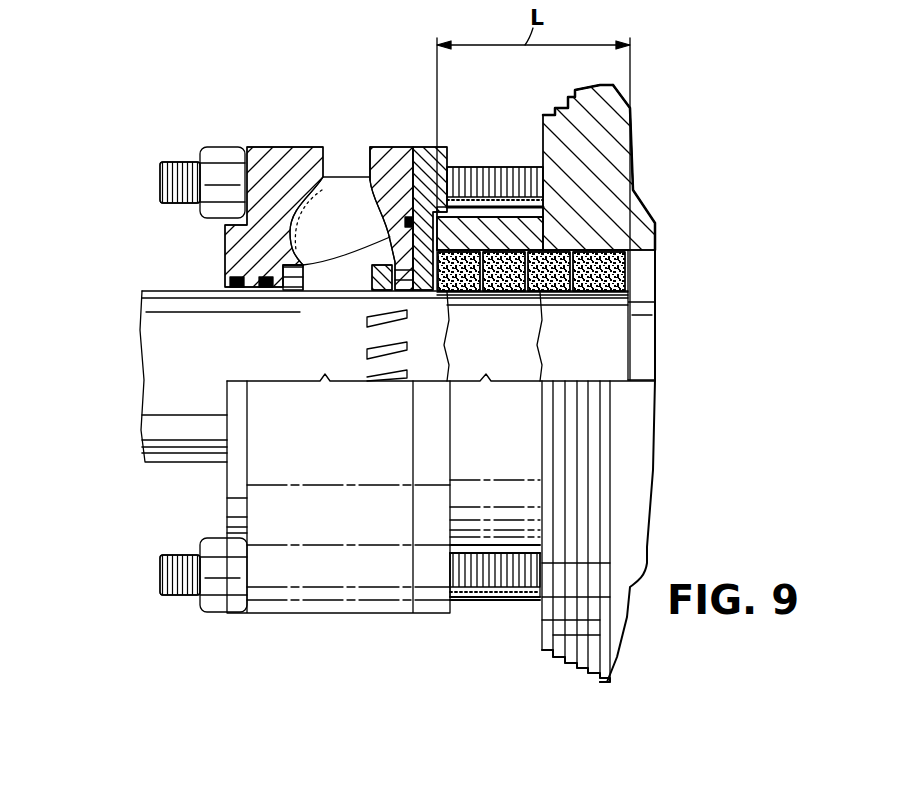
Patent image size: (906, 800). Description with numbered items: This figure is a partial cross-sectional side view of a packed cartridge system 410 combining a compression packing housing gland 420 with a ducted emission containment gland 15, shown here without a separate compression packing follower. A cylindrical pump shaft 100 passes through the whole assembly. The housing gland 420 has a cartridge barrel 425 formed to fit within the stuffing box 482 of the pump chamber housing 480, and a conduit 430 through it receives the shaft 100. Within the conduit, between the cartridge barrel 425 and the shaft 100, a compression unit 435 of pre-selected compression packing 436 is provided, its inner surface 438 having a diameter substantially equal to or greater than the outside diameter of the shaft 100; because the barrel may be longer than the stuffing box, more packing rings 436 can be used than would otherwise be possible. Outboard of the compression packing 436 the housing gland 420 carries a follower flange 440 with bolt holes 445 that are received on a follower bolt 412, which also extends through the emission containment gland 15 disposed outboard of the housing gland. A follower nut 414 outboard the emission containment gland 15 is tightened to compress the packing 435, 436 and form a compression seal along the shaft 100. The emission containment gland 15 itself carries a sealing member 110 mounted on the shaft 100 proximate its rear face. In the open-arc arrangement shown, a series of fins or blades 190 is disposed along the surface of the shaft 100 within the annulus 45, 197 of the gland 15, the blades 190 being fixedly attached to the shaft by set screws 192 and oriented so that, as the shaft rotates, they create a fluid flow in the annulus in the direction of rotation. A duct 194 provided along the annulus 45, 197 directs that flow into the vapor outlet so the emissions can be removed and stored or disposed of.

The emission containment gland 15 is at (340, 625).
The annulus 45 is at (292, 280).
The pump shaft 100 is at (185, 388).
The sealing member 110 is at (235, 285).
The fins 190 is at (350, 283).
The set screws 192 is at (335, 288).
The duct 194 is at (348, 190).
The annulus 197 is at (166, 327).
The packed cartridge system 410 is at (638, 373).
The follower bolt 412 is at (501, 168).
The follower nut 414 is at (207, 155).
The compression packing housing gland 420 is at (423, 138).
The cartridge barrel 425 is at (515, 460).
The conduit 430 is at (503, 365).
The compression unit 435 is at (527, 245).
The compression packing 436 is at (640, 268).
The inner surface of the compression unit 438 is at (467, 293).
The follower flange 440 is at (450, 200).
The bolt holes 445 is at (458, 165).
The pump chamber housing 480 is at (600, 147).
The stuffing box 482 is at (632, 178).